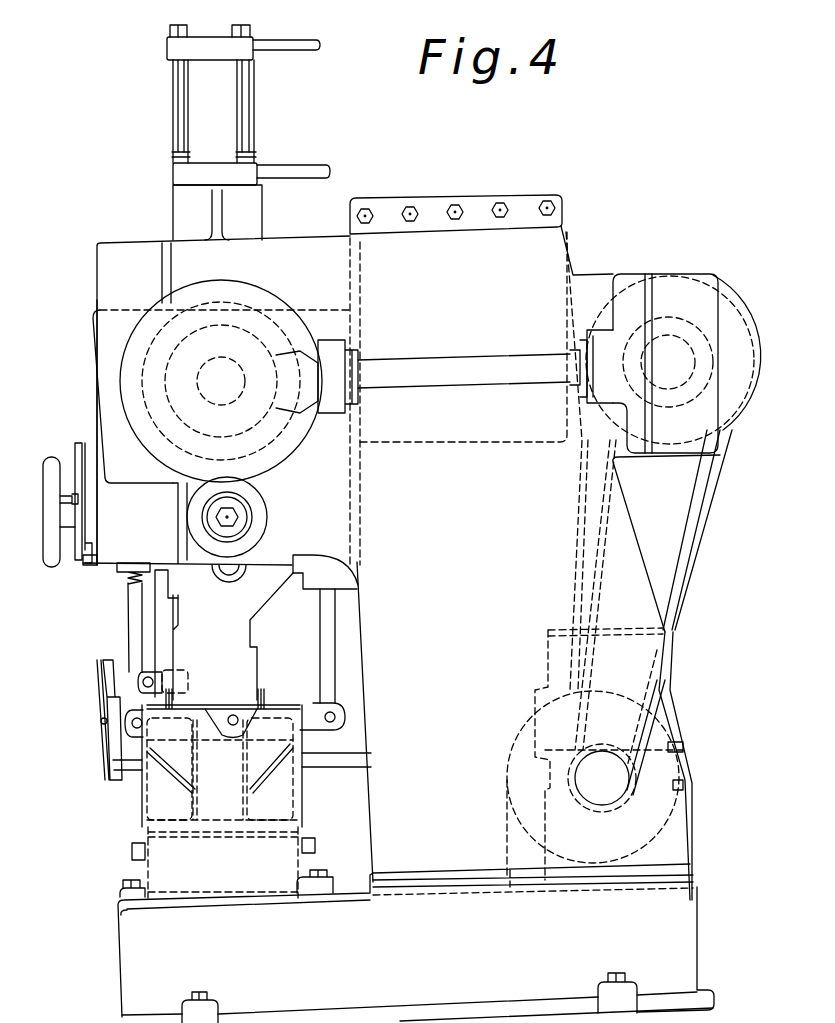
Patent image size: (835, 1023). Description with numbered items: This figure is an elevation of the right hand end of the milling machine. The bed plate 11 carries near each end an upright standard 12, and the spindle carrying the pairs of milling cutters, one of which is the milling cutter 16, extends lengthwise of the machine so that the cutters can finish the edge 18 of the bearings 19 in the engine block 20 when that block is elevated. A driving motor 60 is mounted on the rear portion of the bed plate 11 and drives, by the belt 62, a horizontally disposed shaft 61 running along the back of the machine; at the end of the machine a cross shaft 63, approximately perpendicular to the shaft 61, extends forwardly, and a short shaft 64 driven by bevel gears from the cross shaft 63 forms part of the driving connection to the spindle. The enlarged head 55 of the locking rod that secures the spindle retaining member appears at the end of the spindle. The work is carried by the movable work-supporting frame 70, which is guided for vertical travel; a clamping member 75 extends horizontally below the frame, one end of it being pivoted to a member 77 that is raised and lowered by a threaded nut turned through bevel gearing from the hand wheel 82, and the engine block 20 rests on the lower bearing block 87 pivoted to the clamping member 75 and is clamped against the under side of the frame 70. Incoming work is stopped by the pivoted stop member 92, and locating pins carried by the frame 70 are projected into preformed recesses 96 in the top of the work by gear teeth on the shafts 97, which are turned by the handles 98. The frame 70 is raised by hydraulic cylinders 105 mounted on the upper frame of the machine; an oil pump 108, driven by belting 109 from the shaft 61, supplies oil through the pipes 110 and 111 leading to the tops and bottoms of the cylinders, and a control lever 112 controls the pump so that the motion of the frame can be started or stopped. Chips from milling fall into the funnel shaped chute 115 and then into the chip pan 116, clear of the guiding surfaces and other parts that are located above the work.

The bed plate 11 is at (350, 944).
The upright standard 12 is at (617, 520).
The milling cutter 16 is at (327, 647).
The edge of bearing 18 is at (244, 582).
The bearing 19 is at (220, 584).
The engine block 20 is at (233, 636).
The enlarged head 55 is at (233, 510).
The driving motor 60 is at (687, 768).
The horizontally disposed shaft 61 is at (693, 347).
The belt 62 is at (703, 547).
The cross shaft 63 is at (472, 360).
The short shaft 64 is at (227, 358).
The work-supporting frame 70 is at (92, 350).
The clamping member 75 is at (313, 729).
The member 77 is at (133, 608).
The hand wheel 82 is at (48, 470).
The lower bearing block 87 is at (225, 703).
The pivoted stop member 92 is at (172, 673).
The preformed recesses 96 is at (180, 572).
The shaft 97 is at (95, 567).
The handle 98 is at (80, 443).
The hydraulic cylinder 105 is at (257, 100).
The oil pump 108 is at (675, 693).
The belting 109 is at (683, 537).
The pipe 110 is at (296, 33).
The pipe 111 is at (298, 163).
The control lever 112 is at (110, 665).
The funnel shaped chute 115 is at (223, 801).
The chip pan 116 is at (160, 903).